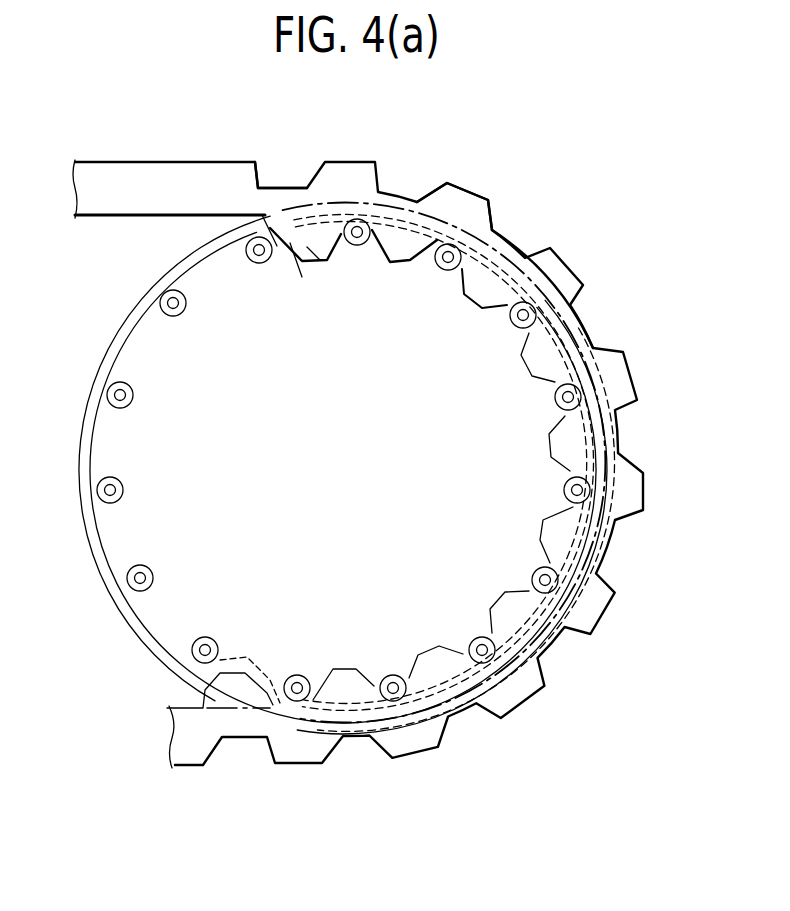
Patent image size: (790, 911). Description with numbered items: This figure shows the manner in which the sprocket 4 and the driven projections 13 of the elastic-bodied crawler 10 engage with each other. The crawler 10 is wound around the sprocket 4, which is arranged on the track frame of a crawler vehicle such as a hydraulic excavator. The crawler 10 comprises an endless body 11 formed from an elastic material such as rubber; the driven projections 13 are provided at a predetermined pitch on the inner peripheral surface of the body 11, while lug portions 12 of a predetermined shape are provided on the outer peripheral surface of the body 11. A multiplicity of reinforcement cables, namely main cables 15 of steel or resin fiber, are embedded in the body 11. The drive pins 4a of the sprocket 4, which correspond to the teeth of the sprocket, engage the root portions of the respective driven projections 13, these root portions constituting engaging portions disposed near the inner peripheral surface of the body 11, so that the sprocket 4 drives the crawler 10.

The sprocket 4 is at (466, 410).
The drive pins 4a is at (494, 240).
The elastic-bodied crawler 10 is at (318, 153).
The endless body 11 is at (250, 197).
The lug portions 12 is at (472, 203).
The driven projections 13 is at (311, 258).
The main cables 15 is at (200, 198).